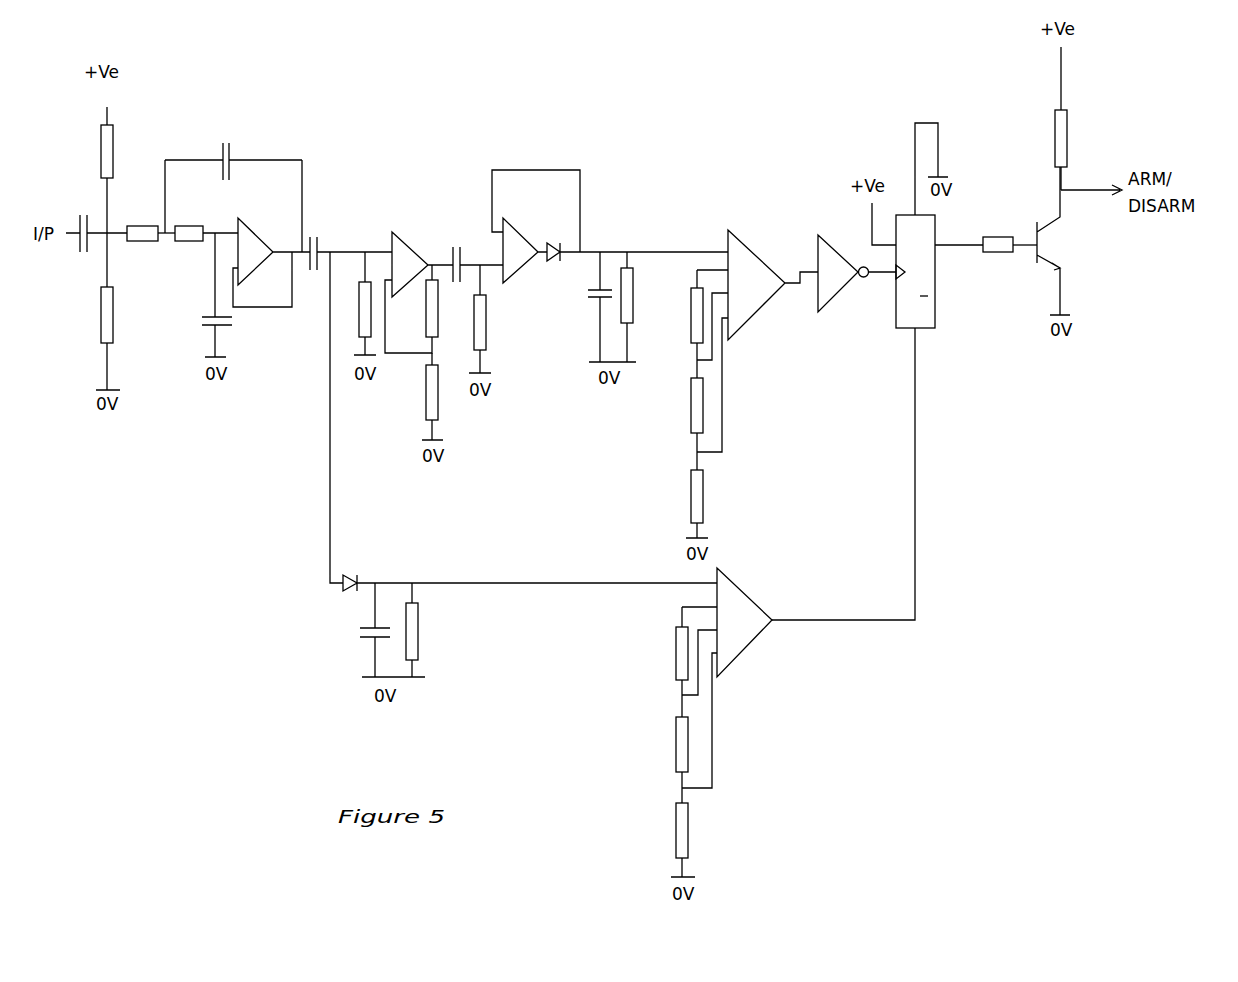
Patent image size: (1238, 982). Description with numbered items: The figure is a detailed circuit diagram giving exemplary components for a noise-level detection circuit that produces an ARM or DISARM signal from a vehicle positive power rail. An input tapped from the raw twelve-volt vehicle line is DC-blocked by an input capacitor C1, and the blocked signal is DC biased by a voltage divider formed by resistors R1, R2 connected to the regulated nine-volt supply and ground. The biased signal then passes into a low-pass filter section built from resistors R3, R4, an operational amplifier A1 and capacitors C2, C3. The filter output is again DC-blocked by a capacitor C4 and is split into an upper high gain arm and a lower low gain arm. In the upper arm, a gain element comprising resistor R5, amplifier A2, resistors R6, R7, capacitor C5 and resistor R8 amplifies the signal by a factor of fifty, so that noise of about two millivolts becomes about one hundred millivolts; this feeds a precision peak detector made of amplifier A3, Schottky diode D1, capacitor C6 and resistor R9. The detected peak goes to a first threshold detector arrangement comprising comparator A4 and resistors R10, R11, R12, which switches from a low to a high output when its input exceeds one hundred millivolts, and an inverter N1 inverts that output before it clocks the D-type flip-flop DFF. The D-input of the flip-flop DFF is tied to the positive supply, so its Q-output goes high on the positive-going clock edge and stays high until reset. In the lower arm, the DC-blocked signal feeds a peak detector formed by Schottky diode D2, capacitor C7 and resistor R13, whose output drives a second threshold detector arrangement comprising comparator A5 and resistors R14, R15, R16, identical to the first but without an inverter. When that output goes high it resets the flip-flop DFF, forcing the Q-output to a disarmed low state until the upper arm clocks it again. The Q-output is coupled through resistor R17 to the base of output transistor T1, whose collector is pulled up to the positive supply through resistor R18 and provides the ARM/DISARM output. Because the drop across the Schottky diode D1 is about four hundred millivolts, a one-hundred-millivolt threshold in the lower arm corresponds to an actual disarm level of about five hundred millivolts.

The voltage divider resistor R1 is at (120, 170).
The voltage divider resistor R2 is at (118, 311).
The low-pass filter resistor R3 is at (151, 220).
The low-pass filter resistor R4 is at (206, 220).
The gain element resistor R5 is at (357, 303).
The gain element resistor R6 is at (411, 309).
The gain element resistor R7 is at (422, 396).
The gain element resistor R8 is at (468, 319).
The precision peak detector resistor R9 is at (640, 307).
The first threshold detector resistor R10 is at (691, 324).
The first threshold detector resistor R11 is at (691, 394).
The first threshold detector resistor R12 is at (681, 504).
The peak detector resistor R13 is at (430, 630).
The second threshold detector resistor R14 is at (678, 662).
The second threshold detector resistor R15 is at (678, 728).
The second threshold detector resistor R16 is at (667, 840).
The base resistor R17 is at (1010, 261).
The load resistor R18 is at (1041, 118).
The input capacitor C1 is at (81, 244).
The low-pass filter capacitor C2 is at (204, 295).
The low-pass filter capacitor C3 is at (233, 185).
The DC blocking capacitor C4 is at (346, 239).
The gain element capacitor C5 is at (472, 248).
The precision peak detector capacitor C6 is at (602, 307).
The peak detector capacitor C7 is at (381, 630).
The low-pass filter amplifier A1 is at (271, 251).
The gain element amplifier A2 is at (419, 250).
The precision peak detector amplifier A3 is at (536, 226).
The first threshold detector comparator A4 is at (773, 283).
The second threshold detector comparator A5 is at (744, 620).
The Schottky diode D1 is at (634, 265).
The Schottky diode D2 is at (523, 421).
The inverter N1 is at (857, 263).
The D-type flip-flop DFF is at (877, 371).
The output transistor T1 is at (1063, 241).